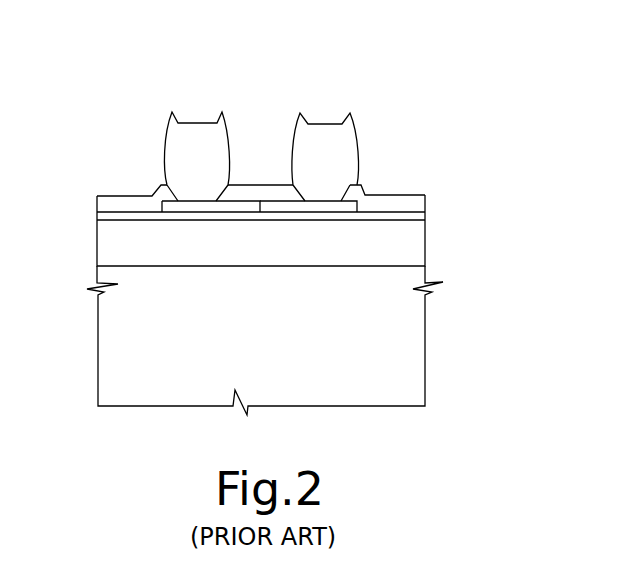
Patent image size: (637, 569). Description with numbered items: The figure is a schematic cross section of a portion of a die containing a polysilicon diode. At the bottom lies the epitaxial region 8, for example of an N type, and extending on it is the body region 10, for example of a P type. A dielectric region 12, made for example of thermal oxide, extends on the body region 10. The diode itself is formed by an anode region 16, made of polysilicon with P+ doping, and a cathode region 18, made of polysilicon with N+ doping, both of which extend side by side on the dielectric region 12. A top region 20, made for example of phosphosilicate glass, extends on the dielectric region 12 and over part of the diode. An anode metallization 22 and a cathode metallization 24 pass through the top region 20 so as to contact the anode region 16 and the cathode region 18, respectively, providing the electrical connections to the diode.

The epitaxial region 8 is at (414, 384).
The body region 10 is at (413, 251).
The dielectric region 12 is at (418, 218).
The anode region 16 is at (249, 203).
The cathode region 18 is at (285, 203).
The top region 20 is at (137, 200).
The anode metallization 22 is at (187, 130).
The cathode metallization 24 is at (346, 140).